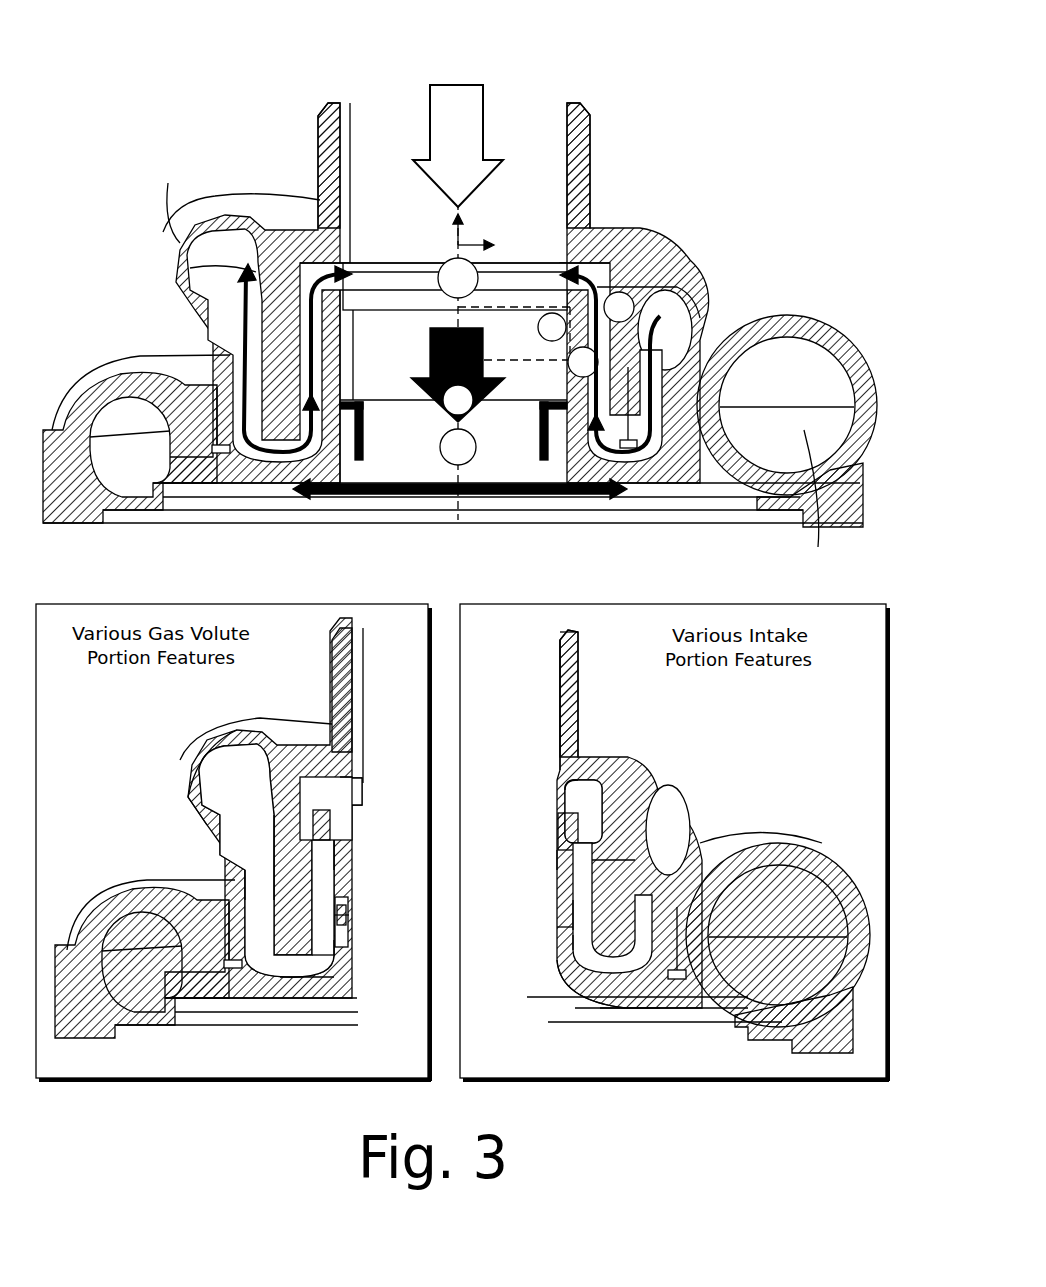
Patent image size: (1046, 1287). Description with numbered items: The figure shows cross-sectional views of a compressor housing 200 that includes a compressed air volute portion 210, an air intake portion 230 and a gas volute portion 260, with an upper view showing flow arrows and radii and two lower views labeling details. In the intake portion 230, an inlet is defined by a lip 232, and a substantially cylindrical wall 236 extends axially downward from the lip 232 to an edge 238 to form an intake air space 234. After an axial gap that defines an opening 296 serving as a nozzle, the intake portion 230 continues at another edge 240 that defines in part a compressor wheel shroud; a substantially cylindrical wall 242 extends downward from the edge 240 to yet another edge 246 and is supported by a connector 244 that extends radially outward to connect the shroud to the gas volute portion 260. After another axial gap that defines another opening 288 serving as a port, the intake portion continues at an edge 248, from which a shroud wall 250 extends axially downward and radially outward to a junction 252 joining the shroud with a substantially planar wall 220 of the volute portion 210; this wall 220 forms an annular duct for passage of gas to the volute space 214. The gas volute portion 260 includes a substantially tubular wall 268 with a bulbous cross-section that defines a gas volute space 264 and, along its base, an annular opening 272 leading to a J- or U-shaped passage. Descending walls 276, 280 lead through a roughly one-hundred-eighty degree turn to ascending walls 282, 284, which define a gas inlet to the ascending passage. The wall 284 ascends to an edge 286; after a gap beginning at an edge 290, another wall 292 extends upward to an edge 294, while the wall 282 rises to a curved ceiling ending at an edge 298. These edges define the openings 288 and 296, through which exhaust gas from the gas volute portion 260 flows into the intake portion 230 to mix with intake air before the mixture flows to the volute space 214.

The compressor housing 200 is at (462, 548).
The compressed air volute portion 210 is at (460, 669).
The volute space 214 is at (115, 873).
The substantially planar wall 220 is at (245, 1010).
The air intake portion 230 is at (590, 172).
The lip 232 is at (560, 632).
The intake air space 234 is at (444, 150).
The substantially cylindrical wall 236 is at (560, 702).
The edge 238 is at (556, 795).
The edge 240 is at (565, 818).
The substantially cylindrical wall 242 is at (558, 862).
The connector 244 is at (592, 873).
The edge 246 is at (568, 925).
The edge 248 is at (575, 932).
The shroud wall 250 is at (570, 965).
The junction 252 is at (620, 1010).
The gas volute portion 260 is at (698, 278).
The gas volute space 264 is at (274, 603).
The substantially tubular wall 268 is at (200, 762).
The annular opening 272 is at (205, 824).
The descending wall 276 is at (228, 880).
The descending wall 280 is at (245, 905).
The ascending wall 282 is at (325, 978).
The ascending wall 284 is at (330, 962).
The edge 286 is at (345, 950).
The opening 288 is at (358, 915).
The edge 290 is at (350, 908).
The wall 292 is at (342, 852).
The edge 294 is at (352, 826).
The opening 296 is at (355, 799).
The edge 298 is at (350, 785).